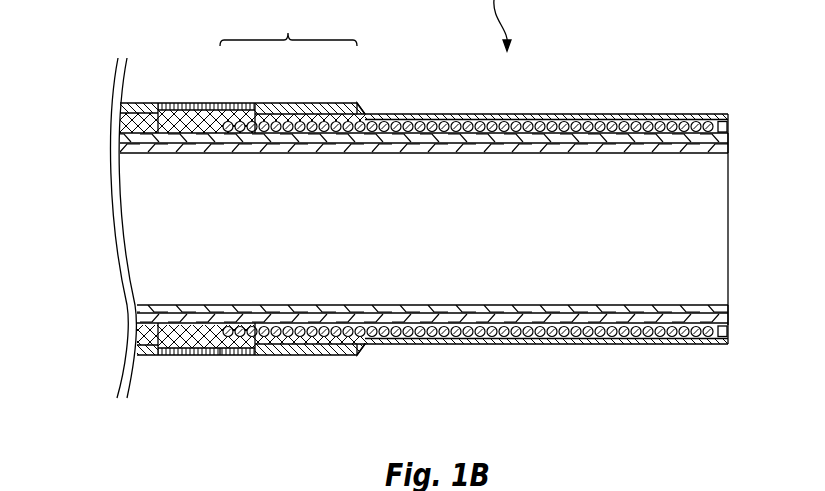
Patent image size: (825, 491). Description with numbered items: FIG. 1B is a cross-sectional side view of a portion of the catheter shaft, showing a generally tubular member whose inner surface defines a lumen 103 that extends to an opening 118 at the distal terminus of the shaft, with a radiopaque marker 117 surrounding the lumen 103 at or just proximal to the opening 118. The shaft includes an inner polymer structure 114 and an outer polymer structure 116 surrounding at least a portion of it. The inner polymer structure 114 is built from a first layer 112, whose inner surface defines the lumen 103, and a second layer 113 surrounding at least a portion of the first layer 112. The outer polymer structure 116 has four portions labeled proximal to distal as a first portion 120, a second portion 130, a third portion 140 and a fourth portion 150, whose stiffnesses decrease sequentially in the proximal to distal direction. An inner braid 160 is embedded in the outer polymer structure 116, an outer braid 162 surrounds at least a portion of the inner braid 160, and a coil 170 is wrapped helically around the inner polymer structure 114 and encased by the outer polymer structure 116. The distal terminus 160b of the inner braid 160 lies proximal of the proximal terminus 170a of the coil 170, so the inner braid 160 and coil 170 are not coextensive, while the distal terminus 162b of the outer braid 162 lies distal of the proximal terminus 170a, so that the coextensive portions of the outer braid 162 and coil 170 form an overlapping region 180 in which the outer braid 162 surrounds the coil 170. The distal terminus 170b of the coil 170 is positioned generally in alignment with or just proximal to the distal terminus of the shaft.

The lumen 103 is at (420, 226).
The first layer 112 is at (614, 146).
The second layer 113 is at (583, 137).
The inner polymer structure 114 is at (732, 135).
The outer polymer structure 116 is at (283, 352).
The radiopaque marker 117 is at (722, 130).
The opening 118 is at (758, 219).
The first portion 120 is at (158, 98).
The second portion 130 is at (255, 98).
The third portion 140 is at (522, 98).
The fourth portion 150 is at (728, 98).
The inner braid 160 is at (132, 124).
The distal terminus of the inner braid 160b is at (220, 355).
The outer braid 162 is at (132, 118).
The distal terminus of the outer braid 162b is at (357, 153).
The coil 170 is at (533, 346).
The proximal terminus of the coil 170a is at (222, 153).
The distal terminus of the coil 170b is at (714, 345).
The overlapping region 180 is at (288, 23).